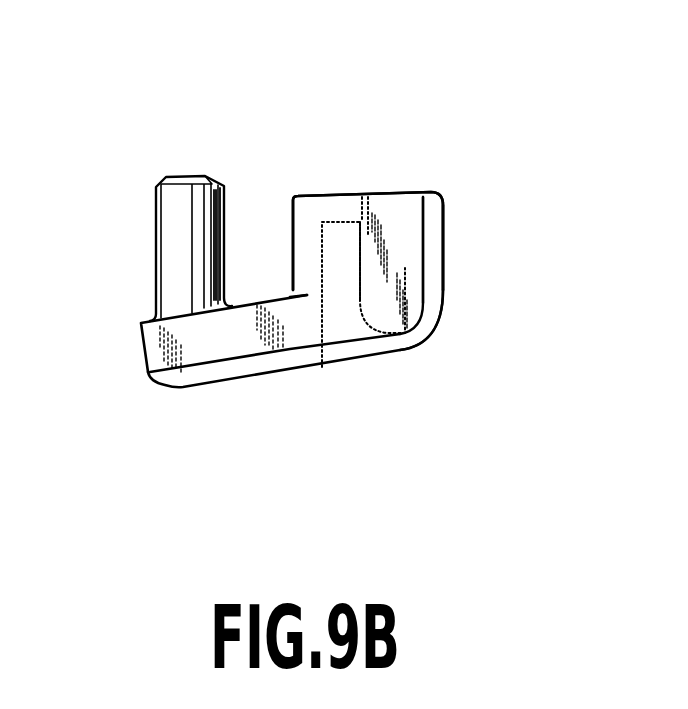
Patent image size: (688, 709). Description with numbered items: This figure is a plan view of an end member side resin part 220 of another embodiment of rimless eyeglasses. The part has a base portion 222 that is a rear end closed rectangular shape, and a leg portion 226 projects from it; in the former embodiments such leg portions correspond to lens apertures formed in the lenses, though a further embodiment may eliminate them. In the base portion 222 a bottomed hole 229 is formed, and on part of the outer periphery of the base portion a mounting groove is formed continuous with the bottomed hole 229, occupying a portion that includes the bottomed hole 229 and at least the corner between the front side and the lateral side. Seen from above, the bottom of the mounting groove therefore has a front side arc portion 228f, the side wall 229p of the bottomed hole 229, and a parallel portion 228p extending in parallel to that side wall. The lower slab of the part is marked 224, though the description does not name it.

The end member side resin part 220 is at (456, 166).
The base portion 222 is at (378, 195).
The base portion 224 is at (263, 350).
The leg portion 226 is at (155, 240).
The parallel portion 228p is at (427, 257).
The front side arc portion 228f is at (398, 340).
The bottomed hole 229 is at (322, 367).
The side wall 229p is at (358, 252).